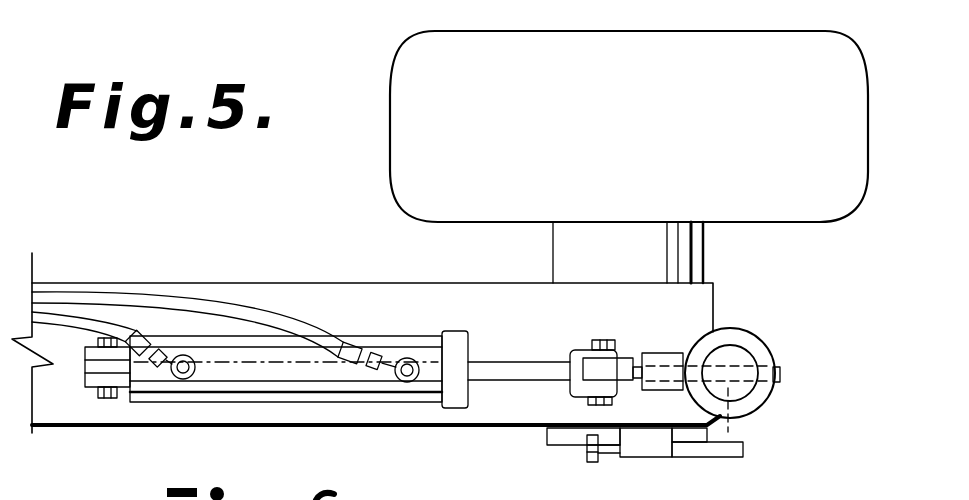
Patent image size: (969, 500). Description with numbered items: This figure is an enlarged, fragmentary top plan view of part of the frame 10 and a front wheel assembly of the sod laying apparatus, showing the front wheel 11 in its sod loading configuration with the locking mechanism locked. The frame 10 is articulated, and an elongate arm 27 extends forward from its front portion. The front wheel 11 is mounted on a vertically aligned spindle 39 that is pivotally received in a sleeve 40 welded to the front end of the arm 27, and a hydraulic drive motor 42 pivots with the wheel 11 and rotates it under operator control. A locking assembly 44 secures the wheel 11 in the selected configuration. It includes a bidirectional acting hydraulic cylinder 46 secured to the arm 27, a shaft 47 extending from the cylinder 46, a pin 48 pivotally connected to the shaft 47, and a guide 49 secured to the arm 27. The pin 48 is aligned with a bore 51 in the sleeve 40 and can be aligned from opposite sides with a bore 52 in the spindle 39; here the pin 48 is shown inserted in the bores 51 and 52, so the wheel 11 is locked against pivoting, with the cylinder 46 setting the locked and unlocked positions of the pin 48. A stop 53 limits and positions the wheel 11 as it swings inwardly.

The frame 10 is at (116, 282).
The front wheel 11 is at (580, 30).
The elongate arm 27 is at (386, 282).
The spindle 39 is at (757, 340).
The sleeve 40 is at (770, 392).
The hydraulic drive motor 42 is at (707, 232).
The locking assembly 44 is at (290, 436).
The hydraulic cylinder 46 is at (343, 333).
The shaft 47 is at (517, 360).
The pin 48 is at (637, 365).
The guide 49 is at (657, 393).
The bore 51 is at (732, 418).
The bore 52 is at (785, 390).
The stop 53 is at (697, 457).